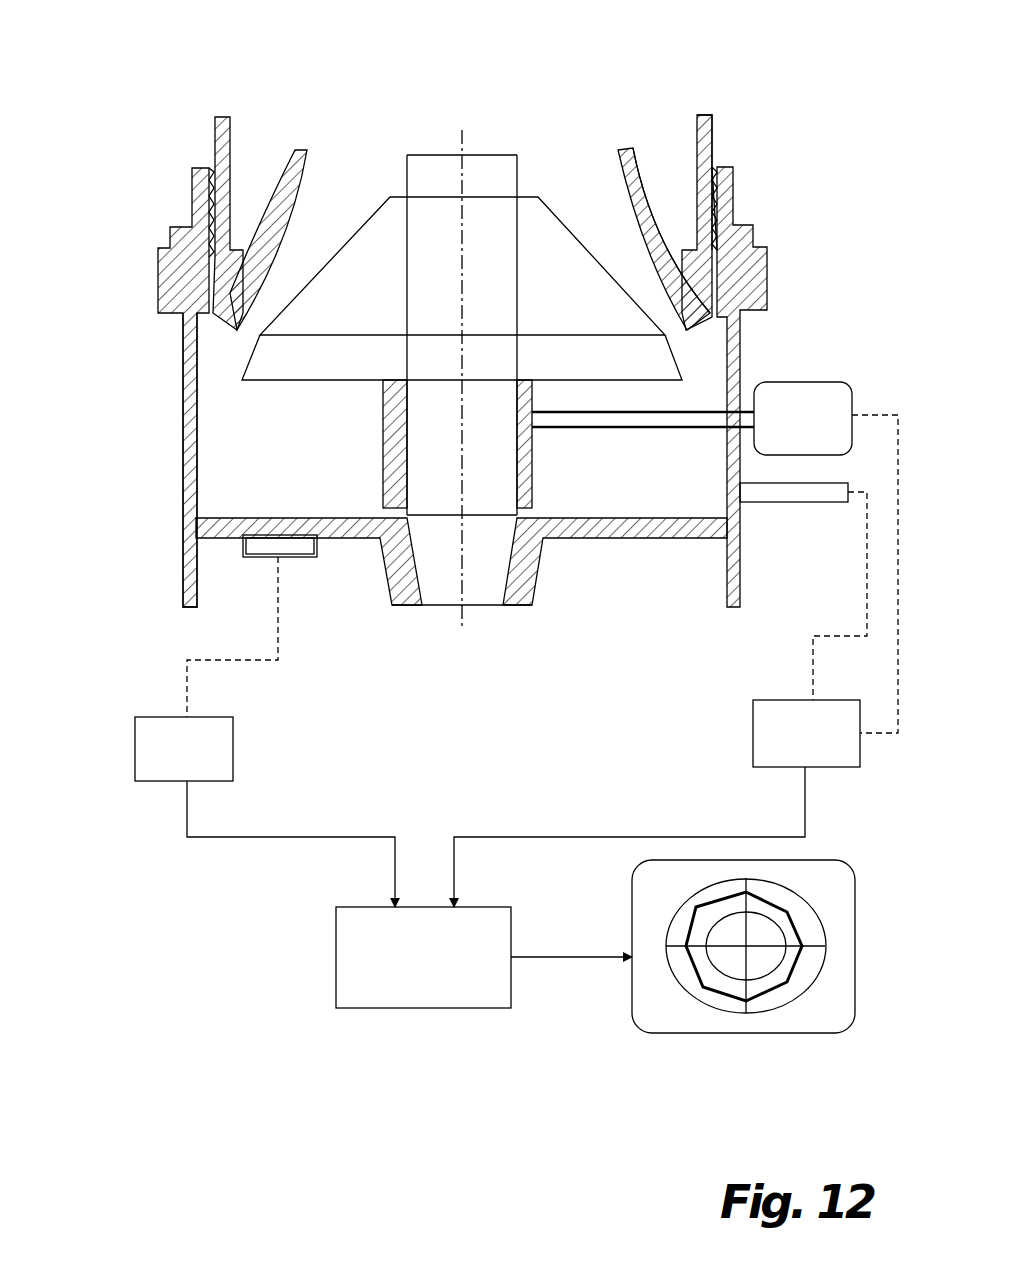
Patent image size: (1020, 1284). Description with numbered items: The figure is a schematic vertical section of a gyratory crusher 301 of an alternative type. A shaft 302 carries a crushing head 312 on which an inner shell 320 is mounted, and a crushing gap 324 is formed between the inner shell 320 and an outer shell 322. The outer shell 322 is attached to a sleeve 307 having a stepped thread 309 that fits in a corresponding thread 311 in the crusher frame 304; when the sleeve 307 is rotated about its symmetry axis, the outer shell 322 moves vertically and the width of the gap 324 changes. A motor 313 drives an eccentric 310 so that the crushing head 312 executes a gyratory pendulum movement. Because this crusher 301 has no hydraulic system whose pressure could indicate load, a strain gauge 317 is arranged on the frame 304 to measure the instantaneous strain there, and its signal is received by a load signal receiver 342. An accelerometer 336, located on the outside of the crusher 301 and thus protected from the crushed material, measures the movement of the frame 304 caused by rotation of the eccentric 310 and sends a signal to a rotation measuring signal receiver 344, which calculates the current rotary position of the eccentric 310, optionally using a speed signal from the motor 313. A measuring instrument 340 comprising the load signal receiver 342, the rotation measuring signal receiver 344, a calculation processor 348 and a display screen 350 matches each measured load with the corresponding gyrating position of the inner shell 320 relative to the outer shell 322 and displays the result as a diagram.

The crusher 301 is at (165, 128).
The shaft 302 is at (420, 155).
The crusher frame 304 is at (182, 458).
The sleeve 307 is at (708, 140).
The stepped thread 309 is at (717, 165).
The thread 311 is at (720, 202).
The eccentric 310 is at (383, 465).
The crushing head 312 is at (323, 383).
The motor 313 is at (823, 382).
The strain gauge 317 is at (300, 553).
The inner shell 320 is at (357, 233).
The outer shell 322 is at (642, 182).
The crushing gap 324 is at (637, 280).
The accelerometer 336 is at (797, 503).
The measuring instrument 340 is at (295, 1010).
The load signal receiver 342 is at (158, 783).
The rotation measuring signal receiver 344 is at (753, 737).
The calculation processor 348 is at (413, 1010).
The display screen 350 is at (630, 1033).